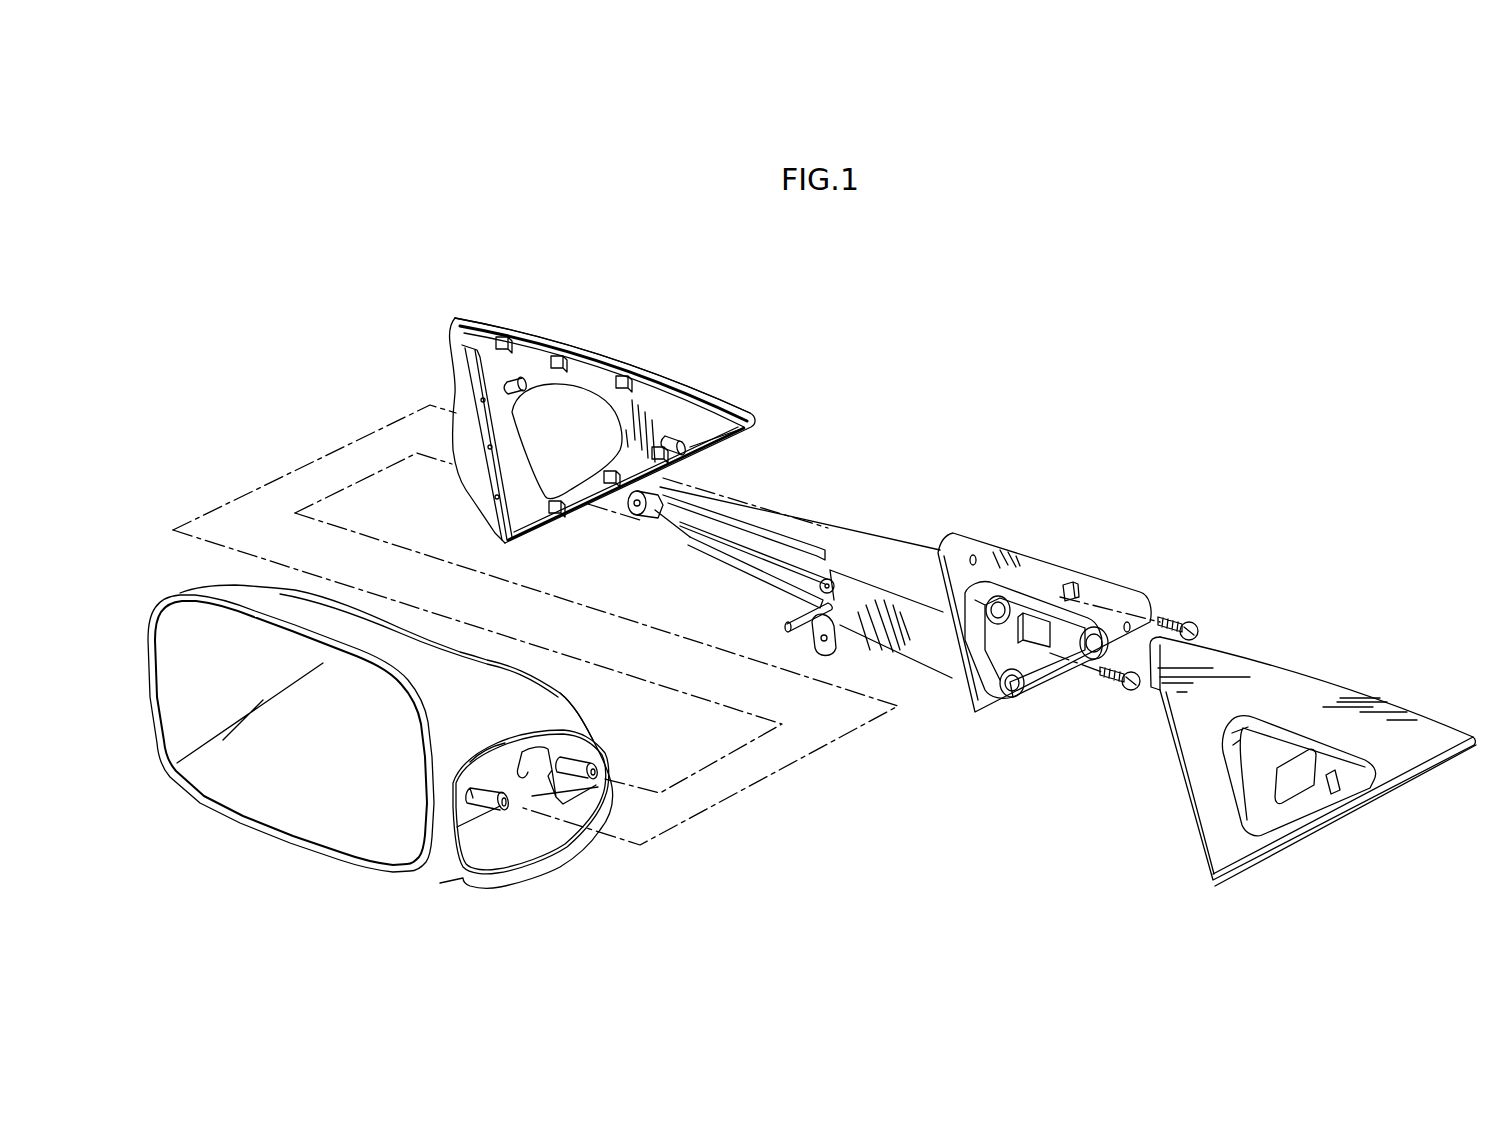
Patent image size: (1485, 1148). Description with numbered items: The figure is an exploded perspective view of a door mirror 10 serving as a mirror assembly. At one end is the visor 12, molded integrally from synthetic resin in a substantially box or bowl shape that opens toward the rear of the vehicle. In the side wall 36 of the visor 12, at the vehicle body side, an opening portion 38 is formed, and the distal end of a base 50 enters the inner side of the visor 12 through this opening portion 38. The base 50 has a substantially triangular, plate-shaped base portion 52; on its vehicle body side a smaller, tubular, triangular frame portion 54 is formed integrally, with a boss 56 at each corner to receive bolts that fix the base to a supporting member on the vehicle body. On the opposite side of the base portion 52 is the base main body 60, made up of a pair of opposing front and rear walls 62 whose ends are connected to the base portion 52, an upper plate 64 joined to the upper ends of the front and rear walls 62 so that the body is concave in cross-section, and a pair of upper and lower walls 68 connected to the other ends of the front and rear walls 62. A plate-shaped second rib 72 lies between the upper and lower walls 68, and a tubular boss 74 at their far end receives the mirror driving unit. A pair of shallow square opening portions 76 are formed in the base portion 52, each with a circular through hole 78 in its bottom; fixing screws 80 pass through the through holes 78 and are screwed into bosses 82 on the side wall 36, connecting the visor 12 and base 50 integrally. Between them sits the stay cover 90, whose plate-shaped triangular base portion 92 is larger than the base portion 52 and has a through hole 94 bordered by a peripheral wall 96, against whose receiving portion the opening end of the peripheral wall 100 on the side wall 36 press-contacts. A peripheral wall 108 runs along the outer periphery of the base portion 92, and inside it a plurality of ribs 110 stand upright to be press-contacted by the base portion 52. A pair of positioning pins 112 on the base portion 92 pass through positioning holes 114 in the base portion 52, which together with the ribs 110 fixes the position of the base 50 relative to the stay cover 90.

The door mirror 10 is at (902, 392).
The visor 12 is at (561, 857).
The side wall 36 is at (497, 760).
The opening portion 38 is at (527, 768).
The base 50 is at (1085, 609).
The base portion 52 is at (1025, 560).
The frame portion 54 is at (975, 655).
The boss 56 is at (1008, 598).
The base main body 60 is at (866, 528).
The front and rear walls 62 is at (880, 650).
The upper plate 64 is at (900, 560).
The upper and lower walls 68 is at (770, 508).
The second rib 72 is at (728, 552).
The tubular boss 74 is at (642, 517).
The opening portions 76 is at (1078, 598).
The through hole 78 is at (1077, 584).
The fixing screws 80 is at (1185, 615).
The bosses 82 is at (487, 788).
The stay cover 90 is at (700, 356).
The base portion 92 is at (647, 407).
The through hole 94 is at (608, 345).
The peripheral wall 96 is at (582, 416).
The peripheral wall 100 is at (573, 731).
The peripheral wall 108 is at (730, 447).
The ribs 110 is at (502, 338).
The positioning pins 112 is at (514, 380).
The positioning holes 114 is at (976, 555).